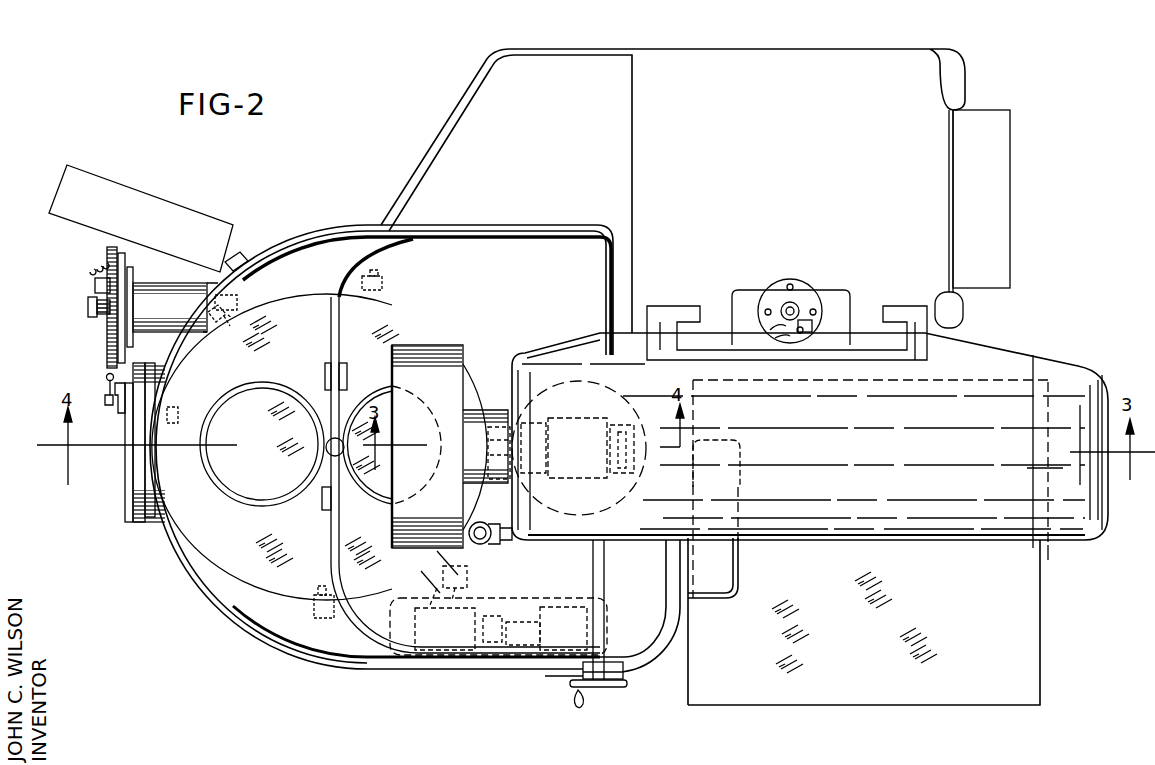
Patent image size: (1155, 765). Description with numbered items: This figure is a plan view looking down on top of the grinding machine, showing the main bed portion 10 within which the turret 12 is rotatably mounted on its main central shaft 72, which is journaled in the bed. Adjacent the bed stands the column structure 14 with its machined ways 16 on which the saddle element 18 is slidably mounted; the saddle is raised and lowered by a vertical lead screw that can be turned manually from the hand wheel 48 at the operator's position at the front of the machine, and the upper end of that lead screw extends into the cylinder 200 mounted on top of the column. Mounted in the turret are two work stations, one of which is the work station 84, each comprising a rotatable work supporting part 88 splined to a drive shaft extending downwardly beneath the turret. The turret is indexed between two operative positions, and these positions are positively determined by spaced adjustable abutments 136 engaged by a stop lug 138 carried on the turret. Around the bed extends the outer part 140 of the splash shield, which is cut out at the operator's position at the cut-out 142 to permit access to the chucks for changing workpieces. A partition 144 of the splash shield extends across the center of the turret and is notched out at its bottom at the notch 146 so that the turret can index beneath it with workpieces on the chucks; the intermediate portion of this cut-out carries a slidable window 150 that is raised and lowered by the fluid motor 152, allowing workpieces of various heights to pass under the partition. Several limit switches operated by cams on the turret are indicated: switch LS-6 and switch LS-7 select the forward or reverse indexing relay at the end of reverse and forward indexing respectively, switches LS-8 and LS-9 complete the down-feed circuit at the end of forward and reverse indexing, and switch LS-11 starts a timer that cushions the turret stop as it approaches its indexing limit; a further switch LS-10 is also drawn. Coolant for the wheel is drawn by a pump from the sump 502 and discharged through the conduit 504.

The main bed portion 10 is at (335, 230).
The turret 12 is at (335, 294).
The column structure 14 is at (935, 254).
The machined ways 16 is at (796, 349).
The saddle element 18 is at (993, 356).
The hand wheel 48 is at (107, 356).
The main central shaft 72 is at (247, 567).
The work station 84 is at (247, 400).
The rotatable work supporting part 88 is at (413, 393).
The adjustable abutments 136 is at (393, 274).
The stop lug 138 is at (305, 606).
The outer part of splash shield 140 is at (353, 233).
The cut-out 142 is at (167, 530).
The partition 144 is at (367, 324).
The notch 146 is at (337, 505).
The slidable window 150 is at (338, 410).
The fluid motor 152 is at (326, 446).
The cylinder 200 is at (807, 299).
The sump 502 is at (887, 643).
The conduit 504 is at (505, 539).
The limit switch LS-6 is at (420, 605).
The limit switch LS-7 is at (175, 307).
The limit switch LS-8 is at (240, 296).
The limit switch LS-9 is at (463, 578).
The limit switch LS-10 is at (95, 286).
The limit switch LS-11 is at (498, 408).